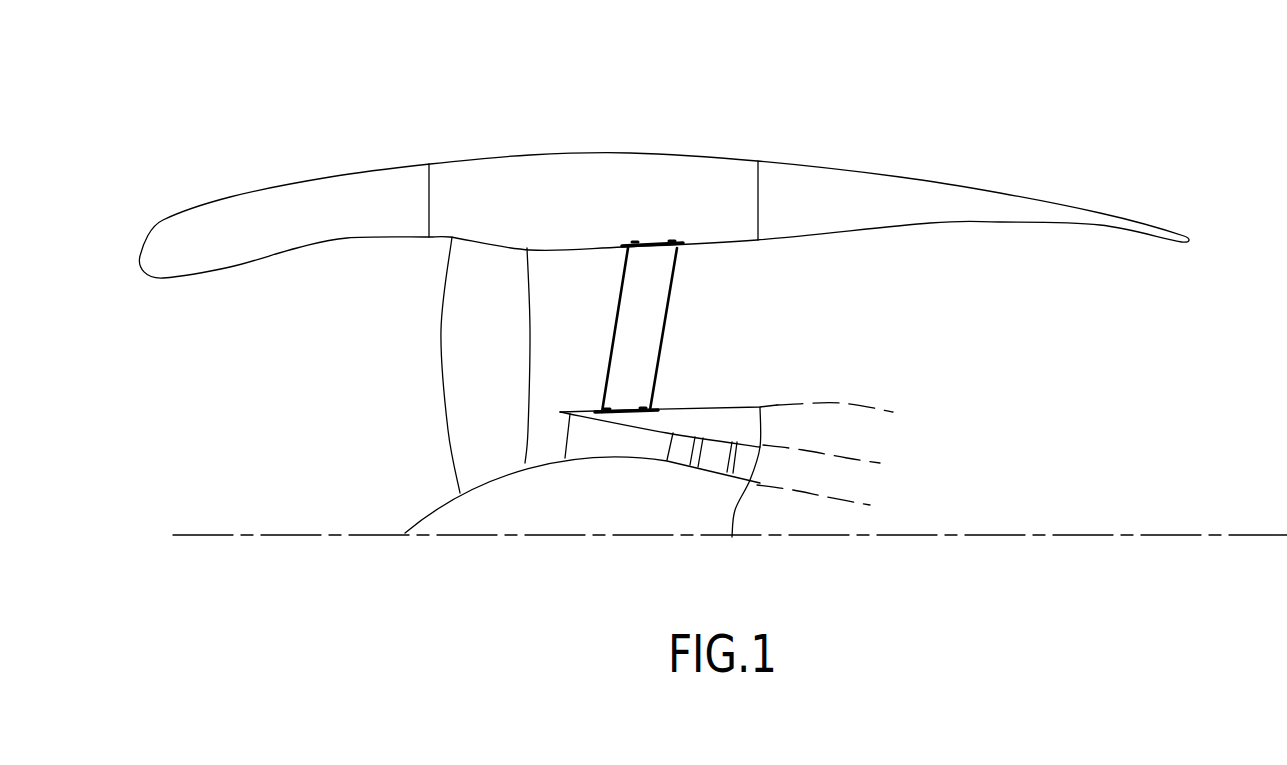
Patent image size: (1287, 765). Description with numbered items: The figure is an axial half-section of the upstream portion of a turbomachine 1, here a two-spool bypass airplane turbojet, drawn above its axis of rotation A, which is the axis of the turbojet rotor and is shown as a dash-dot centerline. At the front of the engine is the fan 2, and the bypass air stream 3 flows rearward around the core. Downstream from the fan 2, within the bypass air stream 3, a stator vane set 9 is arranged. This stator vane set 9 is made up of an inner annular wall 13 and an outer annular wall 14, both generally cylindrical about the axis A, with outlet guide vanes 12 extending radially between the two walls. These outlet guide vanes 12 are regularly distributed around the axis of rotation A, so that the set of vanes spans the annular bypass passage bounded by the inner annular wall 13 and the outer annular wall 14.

The turbomachine 1 is at (885, 130).
The fan 2 is at (457, 358).
The bypass air stream 3 is at (794, 313).
The stator vane set 9 is at (668, 328).
The outlet guide vane 12 is at (627, 330).
The inner annular wall 13 is at (618, 414).
The outer annular wall 14 is at (658, 241).
The axis of rotation A is at (203, 535).